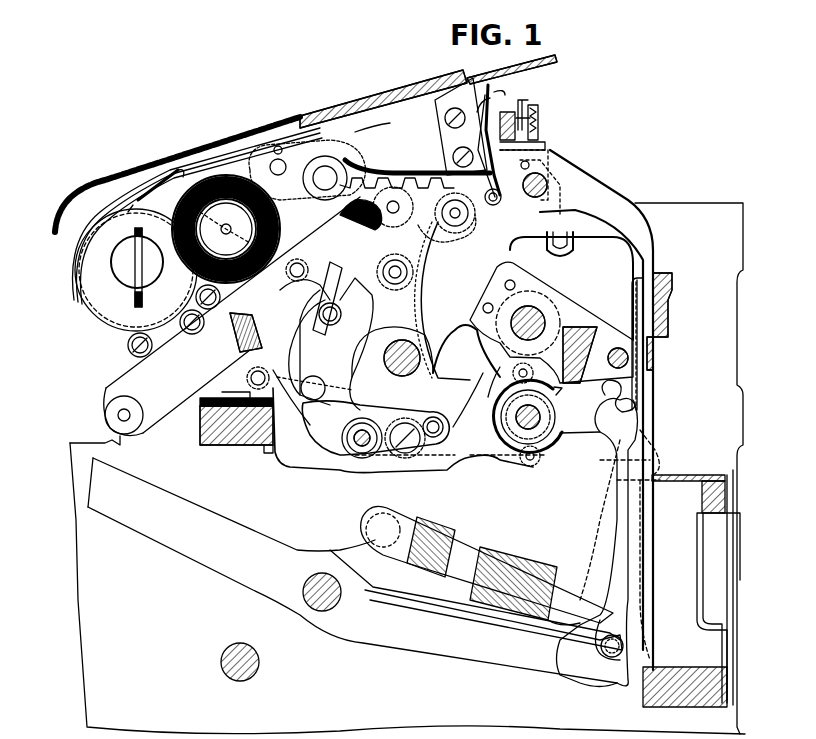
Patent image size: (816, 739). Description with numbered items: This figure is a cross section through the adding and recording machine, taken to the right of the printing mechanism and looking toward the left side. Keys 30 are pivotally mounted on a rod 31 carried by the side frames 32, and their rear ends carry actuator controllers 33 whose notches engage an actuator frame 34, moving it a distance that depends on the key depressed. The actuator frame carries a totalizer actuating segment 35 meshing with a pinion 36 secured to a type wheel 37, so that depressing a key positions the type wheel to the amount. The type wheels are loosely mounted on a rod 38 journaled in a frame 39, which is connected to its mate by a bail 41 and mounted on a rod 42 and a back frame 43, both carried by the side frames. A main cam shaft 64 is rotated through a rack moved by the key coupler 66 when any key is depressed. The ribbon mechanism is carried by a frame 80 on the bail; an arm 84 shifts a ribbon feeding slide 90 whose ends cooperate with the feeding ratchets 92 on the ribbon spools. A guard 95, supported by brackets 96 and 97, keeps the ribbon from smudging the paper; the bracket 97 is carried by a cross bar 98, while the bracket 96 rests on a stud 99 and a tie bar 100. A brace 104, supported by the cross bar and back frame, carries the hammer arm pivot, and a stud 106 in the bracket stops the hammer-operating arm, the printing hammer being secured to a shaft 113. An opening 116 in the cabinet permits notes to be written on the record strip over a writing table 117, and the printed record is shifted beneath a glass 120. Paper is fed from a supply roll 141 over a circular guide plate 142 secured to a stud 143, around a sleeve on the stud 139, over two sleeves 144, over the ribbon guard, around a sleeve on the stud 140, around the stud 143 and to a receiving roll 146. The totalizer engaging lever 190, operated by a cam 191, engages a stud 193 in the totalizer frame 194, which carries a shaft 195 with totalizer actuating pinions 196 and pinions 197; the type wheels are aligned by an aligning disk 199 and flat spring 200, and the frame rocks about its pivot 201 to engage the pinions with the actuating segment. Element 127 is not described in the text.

The keys 30 is at (212, 512).
The rod 31 is at (340, 600).
The side frames 32 is at (742, 418).
The actuator controllers 33 is at (660, 447).
The actuator frame 34 is at (565, 315).
The totalizer actuating segment 35 is at (512, 254).
The pinion 36 is at (468, 208).
The type wheel 37 is at (468, 247).
The rod 38 is at (470, 222).
The frame 39 is at (583, 180).
The bail 41 is at (540, 152).
The rod 42 is at (547, 186).
The back frame 43 is at (672, 282).
The main cam shaft 64 is at (540, 430).
The key coupler 66 is at (540, 555).
The frame 80 is at (540, 143).
The arm 84 is at (538, 108).
The ribbon feeding slide 90 is at (515, 100).
The feeding ratchets 92 is at (500, 194).
The guard 95 is at (495, 88).
The bracket 96 is at (433, 115).
The bracket 97 is at (180, 400).
The cross bar 98 is at (222, 448).
The stud 99 is at (280, 175).
The tie bar 100 is at (480, 110).
The brace 104 is at (318, 460).
The stud 106 is at (305, 255).
The shaft 113 is at (310, 190).
The opening 116 is at (255, 141).
The writing table 117 is at (263, 142).
The glass 120 is at (380, 100).
The pivot pin 127 is at (250, 377).
The stud 139 is at (152, 347).
The stud 140 is at (200, 332).
The supply roll 141 is at (245, 178).
The circular guide plate 142 is at (140, 198).
The stud 143 is at (195, 298).
The sleeves 144 is at (490, 80).
The receiving roll 146 is at (118, 250).
The engaging lever 190 is at (452, 460).
The cam 191 is at (540, 450).
The stud 193 is at (316, 377).
The totalizer frame 194 is at (315, 330).
The shaft 195 is at (392, 282).
The totalizer actuating pinions 196 is at (372, 255).
The pinion 197 is at (383, 280).
The aligning disk 199 is at (380, 178).
The flat spring 200 is at (335, 229).
The pivot 201 is at (368, 444).